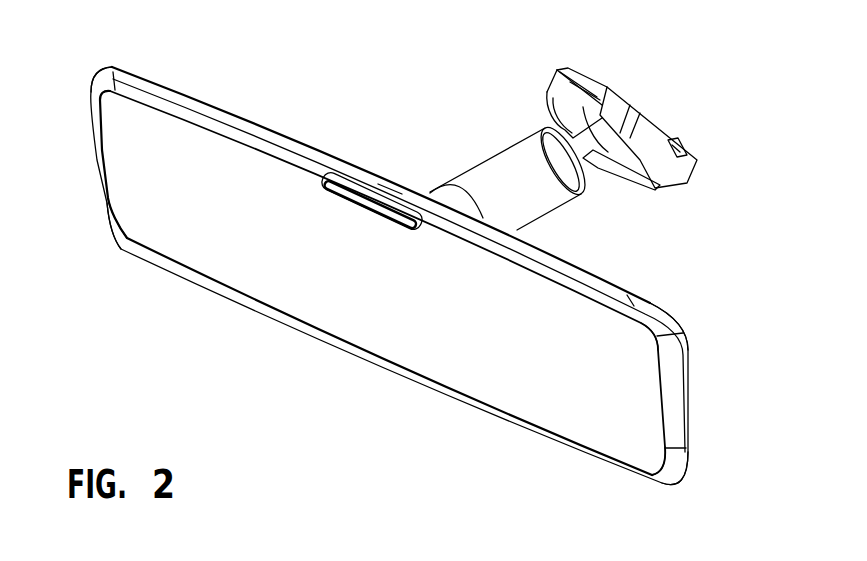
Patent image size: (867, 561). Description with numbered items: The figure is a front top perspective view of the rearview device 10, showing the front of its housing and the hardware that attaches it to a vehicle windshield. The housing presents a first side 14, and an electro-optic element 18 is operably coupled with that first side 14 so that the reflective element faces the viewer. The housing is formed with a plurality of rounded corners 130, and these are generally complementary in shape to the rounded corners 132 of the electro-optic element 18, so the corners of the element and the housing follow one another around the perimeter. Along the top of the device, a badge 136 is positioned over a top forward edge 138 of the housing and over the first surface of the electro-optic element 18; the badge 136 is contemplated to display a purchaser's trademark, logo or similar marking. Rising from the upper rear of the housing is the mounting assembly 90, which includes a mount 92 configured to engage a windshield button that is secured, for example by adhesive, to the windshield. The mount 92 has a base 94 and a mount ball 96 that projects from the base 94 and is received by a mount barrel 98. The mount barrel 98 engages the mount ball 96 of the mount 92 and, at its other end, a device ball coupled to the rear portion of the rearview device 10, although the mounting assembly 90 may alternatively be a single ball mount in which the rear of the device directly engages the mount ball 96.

The rearview device 10 is at (356, 398).
The first side 14 is at (176, 108).
The electro-optic element 18 is at (590, 333).
The mounting assembly 90 is at (531, 65).
The mount 92 is at (651, 137).
The base 94 is at (614, 105).
The mount ball 96 is at (590, 165).
The mount barrel 98 is at (505, 163).
The rounded corners 130 is at (100, 76).
The rounded corners 132 is at (96, 87).
The badge 136 is at (363, 203).
The top forward edge 138 is at (406, 195).